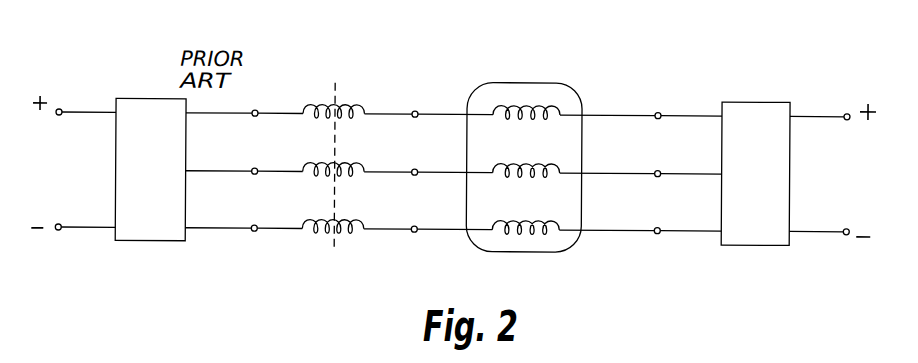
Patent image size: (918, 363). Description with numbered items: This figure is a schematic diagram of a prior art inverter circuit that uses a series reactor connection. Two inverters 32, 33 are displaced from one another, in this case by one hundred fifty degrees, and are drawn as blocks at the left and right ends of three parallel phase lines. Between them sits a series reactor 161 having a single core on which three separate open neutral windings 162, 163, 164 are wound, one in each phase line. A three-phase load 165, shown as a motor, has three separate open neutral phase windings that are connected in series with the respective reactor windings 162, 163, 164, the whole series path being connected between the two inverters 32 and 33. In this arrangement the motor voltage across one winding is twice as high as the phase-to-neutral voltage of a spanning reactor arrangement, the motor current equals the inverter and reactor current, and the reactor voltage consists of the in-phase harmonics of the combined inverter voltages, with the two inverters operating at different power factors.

The inverter 32 is at (157, 100).
The inverter 33 is at (780, 103).
The series reactor 161 is at (336, 246).
The reactor winding 162 is at (363, 103).
The reactor winding 163 is at (363, 162).
The reactor winding 164 is at (364, 216).
The three-phase load 165 is at (570, 97).